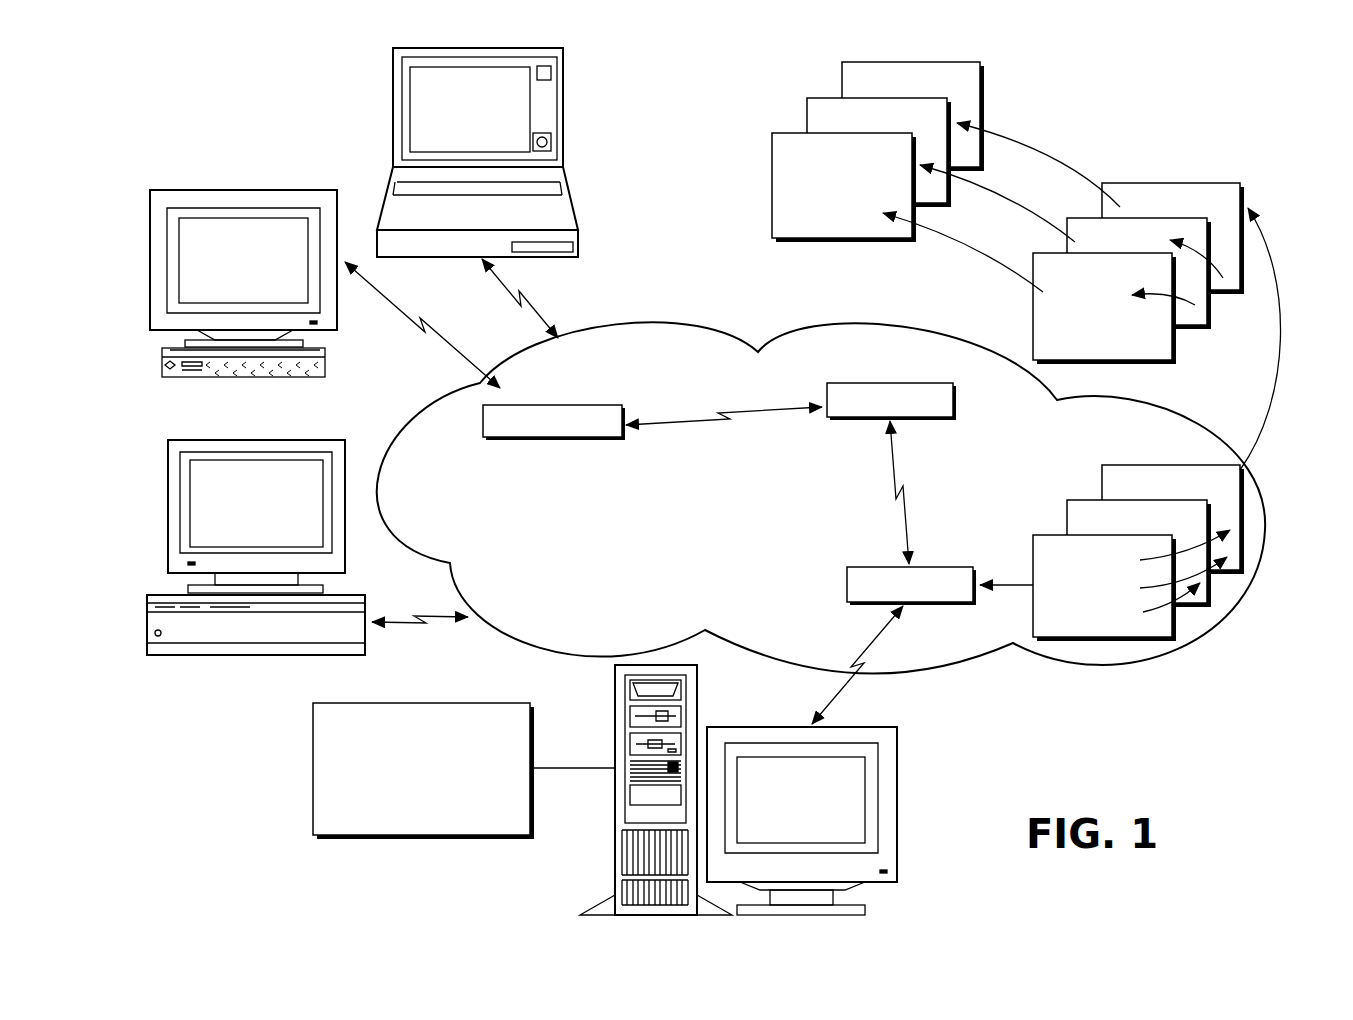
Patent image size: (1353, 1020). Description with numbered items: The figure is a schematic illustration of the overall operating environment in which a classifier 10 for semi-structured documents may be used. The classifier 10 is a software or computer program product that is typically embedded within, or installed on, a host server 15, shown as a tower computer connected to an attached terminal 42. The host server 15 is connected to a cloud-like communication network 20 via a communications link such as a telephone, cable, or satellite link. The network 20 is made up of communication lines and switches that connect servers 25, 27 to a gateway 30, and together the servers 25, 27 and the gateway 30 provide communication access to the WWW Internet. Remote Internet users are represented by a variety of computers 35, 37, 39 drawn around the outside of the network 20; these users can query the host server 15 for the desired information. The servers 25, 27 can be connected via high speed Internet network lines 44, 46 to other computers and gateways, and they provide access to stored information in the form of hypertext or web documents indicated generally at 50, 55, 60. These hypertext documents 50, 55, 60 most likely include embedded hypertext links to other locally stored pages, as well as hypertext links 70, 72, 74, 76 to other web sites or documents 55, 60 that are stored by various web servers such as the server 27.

The classifier 10 is at (313, 750).
The host server 15 is at (615, 710).
The communication network 20 is at (680, 328).
The server 25 is at (890, 567).
The server 27 is at (905, 383).
The gateway 30 is at (553, 440).
The computer 35 is at (573, 203).
The computer 37 is at (310, 188).
The computer 39 is at (308, 438).
The client terminal 42 is at (820, 700).
The high speed Internet network line 44 is at (905, 520).
The high speed Internet network line 46 is at (712, 415).
The hypertext documents 50 is at (1248, 540).
The hypertext documents 55 is at (1250, 208).
The hypertext documents 60 is at (790, 118).
The hypertext link 70 is at (1282, 385).
The hypertext link 72 is at (1055, 167).
The hypertext link 74 is at (1018, 208).
The hypertext link 76 is at (970, 250).